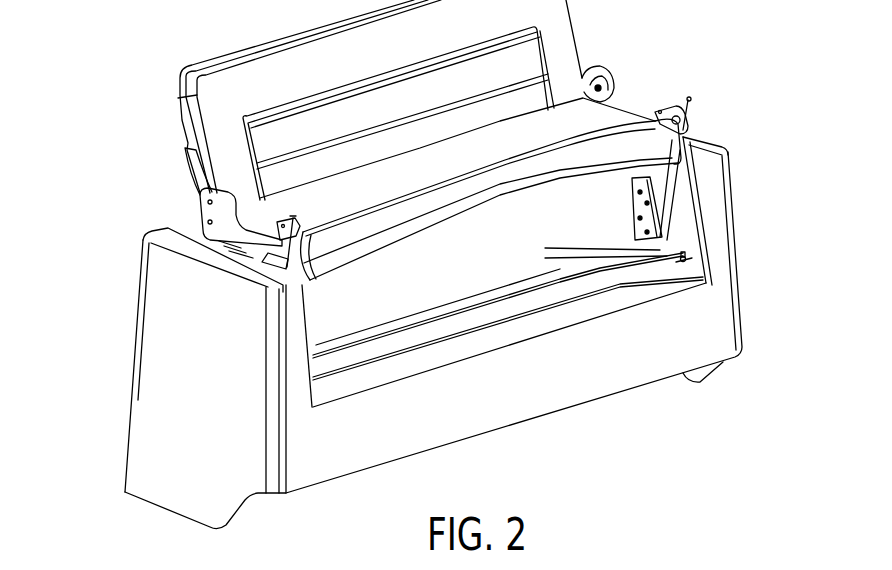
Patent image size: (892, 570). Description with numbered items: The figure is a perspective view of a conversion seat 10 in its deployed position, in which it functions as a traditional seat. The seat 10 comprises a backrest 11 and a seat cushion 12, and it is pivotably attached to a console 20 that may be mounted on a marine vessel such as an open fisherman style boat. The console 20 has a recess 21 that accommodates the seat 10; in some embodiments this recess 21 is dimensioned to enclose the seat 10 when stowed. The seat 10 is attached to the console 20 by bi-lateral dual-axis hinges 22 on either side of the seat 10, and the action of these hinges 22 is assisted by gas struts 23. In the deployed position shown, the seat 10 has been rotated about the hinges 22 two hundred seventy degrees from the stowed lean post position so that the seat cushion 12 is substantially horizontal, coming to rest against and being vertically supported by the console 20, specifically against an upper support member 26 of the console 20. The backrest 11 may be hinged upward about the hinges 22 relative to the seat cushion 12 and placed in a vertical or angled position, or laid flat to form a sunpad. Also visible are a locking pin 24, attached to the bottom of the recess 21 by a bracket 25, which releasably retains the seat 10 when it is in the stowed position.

The conversion seat 10 is at (160, 143).
The backrest 11 is at (392, 58).
The seat cushion 12 is at (471, 175).
The console 20 is at (724, 326).
The recess 21 is at (348, 321).
The bi-lateral dual-axis hinges 22 is at (611, 86).
The gas struts 23 is at (690, 110).
The locking pin 24 is at (682, 257).
The bracket 25 is at (688, 262).
The upper support member 26 is at (258, 263).